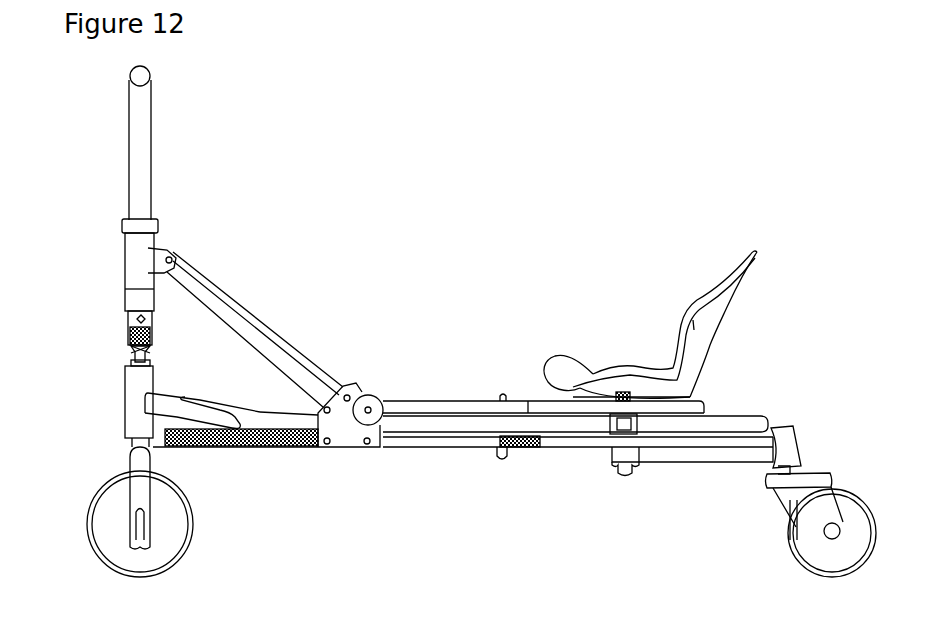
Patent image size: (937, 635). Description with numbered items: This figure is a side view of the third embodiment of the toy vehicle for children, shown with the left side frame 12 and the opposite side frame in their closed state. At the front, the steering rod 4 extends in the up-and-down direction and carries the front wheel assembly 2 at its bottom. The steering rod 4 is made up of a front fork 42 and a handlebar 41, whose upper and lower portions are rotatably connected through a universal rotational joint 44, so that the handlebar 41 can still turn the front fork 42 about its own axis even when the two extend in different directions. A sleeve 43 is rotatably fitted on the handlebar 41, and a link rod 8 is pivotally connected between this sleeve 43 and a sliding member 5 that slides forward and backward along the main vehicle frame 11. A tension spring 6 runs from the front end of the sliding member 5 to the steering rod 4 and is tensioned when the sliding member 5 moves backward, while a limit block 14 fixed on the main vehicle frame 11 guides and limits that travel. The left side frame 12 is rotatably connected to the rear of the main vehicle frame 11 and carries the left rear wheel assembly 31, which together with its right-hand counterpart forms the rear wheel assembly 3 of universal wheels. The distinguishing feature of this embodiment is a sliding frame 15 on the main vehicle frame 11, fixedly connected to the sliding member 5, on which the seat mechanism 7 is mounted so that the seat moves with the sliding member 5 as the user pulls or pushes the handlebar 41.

The front wheel assembly 2 is at (118, 530).
The rear wheel assembly 3 is at (833, 442).
The left rear wheel assembly 31 is at (850, 540).
The steering rod 4 is at (108, 378).
The handlebar 41 is at (135, 178).
The front fork 42 is at (125, 418).
The sleeve 43 is at (135, 245).
The universal rotational joint 44 is at (128, 332).
The sliding member 5 is at (352, 430).
The tension spring 6 is at (268, 447).
The seat mechanism 7 is at (693, 327).
The link rod 8 is at (240, 308).
The main vehicle frame 11 is at (436, 420).
The left side frame 12 is at (675, 452).
The limit block 14 is at (505, 460).
The sliding frame 15 is at (400, 404).